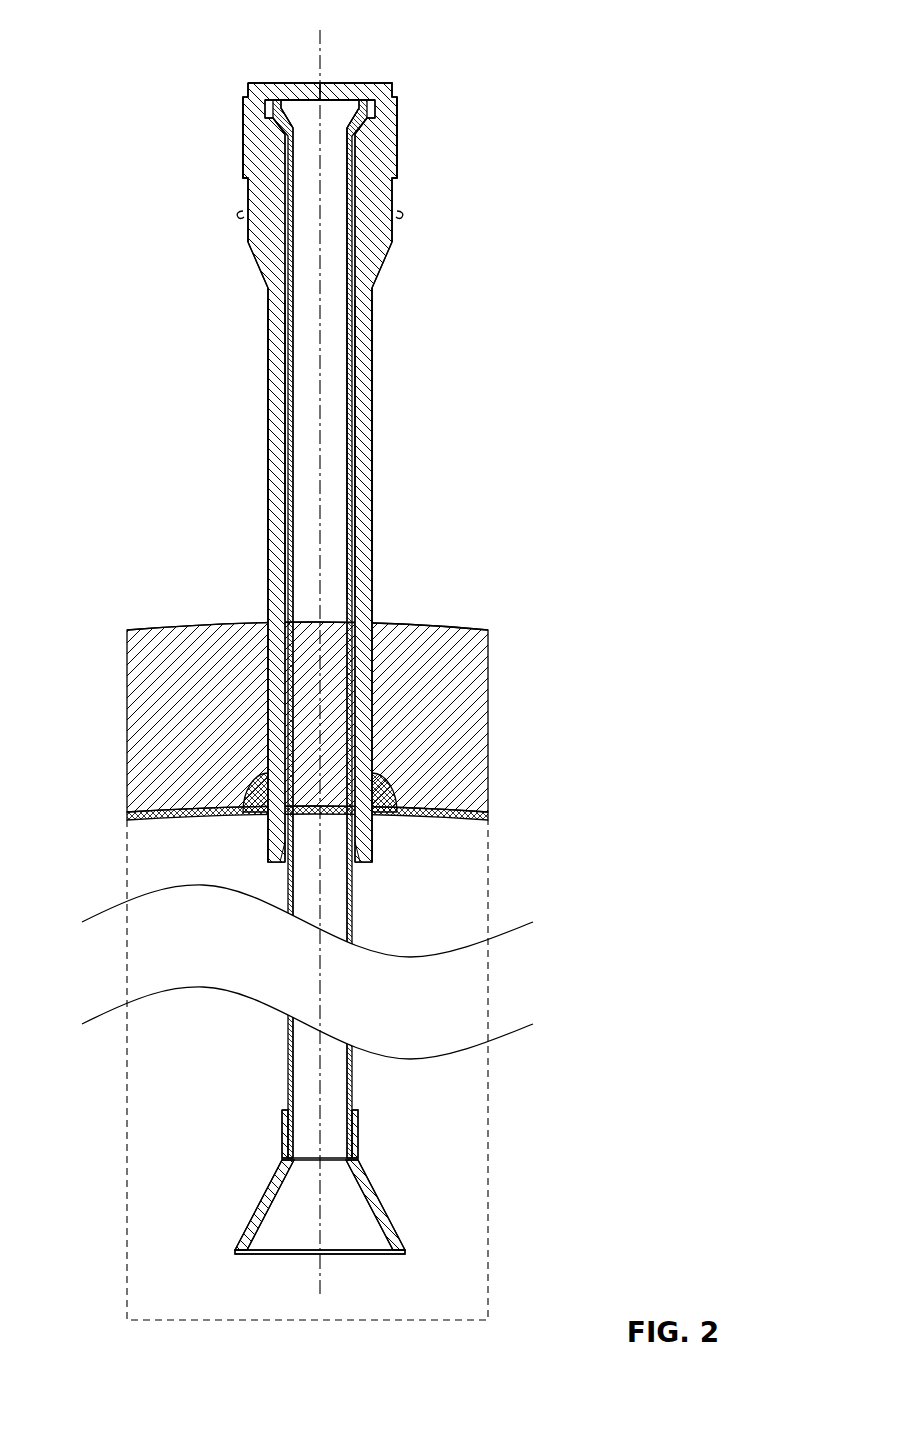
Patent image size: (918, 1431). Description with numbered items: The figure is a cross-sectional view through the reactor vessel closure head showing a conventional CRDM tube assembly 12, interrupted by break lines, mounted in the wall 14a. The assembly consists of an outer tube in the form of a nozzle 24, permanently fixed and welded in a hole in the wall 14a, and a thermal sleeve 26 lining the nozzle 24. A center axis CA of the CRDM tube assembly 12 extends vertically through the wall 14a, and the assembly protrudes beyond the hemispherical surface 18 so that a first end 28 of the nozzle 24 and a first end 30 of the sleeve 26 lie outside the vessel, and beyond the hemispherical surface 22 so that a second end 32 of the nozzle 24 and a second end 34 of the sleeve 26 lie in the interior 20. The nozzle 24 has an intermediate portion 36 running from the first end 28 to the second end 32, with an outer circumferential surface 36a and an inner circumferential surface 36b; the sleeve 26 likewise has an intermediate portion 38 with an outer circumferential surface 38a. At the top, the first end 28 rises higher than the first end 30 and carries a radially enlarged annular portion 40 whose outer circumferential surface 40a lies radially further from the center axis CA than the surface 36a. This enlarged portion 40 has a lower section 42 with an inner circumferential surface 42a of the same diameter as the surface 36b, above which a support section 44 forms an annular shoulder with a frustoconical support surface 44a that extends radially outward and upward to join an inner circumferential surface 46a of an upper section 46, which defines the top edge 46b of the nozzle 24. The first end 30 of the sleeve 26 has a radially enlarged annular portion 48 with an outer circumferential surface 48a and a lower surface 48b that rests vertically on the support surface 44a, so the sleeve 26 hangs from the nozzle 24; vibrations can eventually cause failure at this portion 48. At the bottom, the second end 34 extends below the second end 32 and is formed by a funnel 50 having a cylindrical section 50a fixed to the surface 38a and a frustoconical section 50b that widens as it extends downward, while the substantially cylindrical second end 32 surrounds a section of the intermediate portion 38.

The CRDM tube assembly 12 is at (97, 284).
The wall 14a is at (185, 640).
The hemispherical surface 18 is at (415, 625).
The interior 20 is at (164, 1080).
The hemispherical surface 22 is at (458, 820).
The nozzle 24 is at (365, 438).
The thermal sleeve 26 is at (350, 496).
The first end of nozzle 28 is at (438, 41).
The first end of sleeve 30 is at (300, 83).
The second end of nozzle 32 is at (245, 840).
The second end of sleeve 34 is at (428, 1271).
The intermediate portion of nozzle 36 is at (255, 427).
The outer circumferential surface of intermediate portion 36a is at (268, 336).
The inner circumferential surface of intermediate portion 36b is at (268, 298).
The intermediate portion of sleeve 38 is at (272, 462).
The outer circumferential surface of intermediate portion 38a is at (350, 376).
The radially enlarged annular portion 40 is at (276, 220).
The outer circumferential surface 40a is at (243, 157).
The lower section 42 is at (228, 200).
The inner circumferential surface 42a is at (275, 252).
The support section 44 is at (247, 184).
The support surface 44a is at (268, 122).
The upper section 46 is at (248, 93).
The inner circumferential surface 46a is at (265, 110).
The top edge 46b is at (257, 83).
The radially enlarged annular portion 48 is at (365, 106).
The outer circumferential surface 48a is at (367, 112).
The lower surface 48b is at (362, 130).
The funnel 50 is at (386, 1126).
The cylindrical section 50a is at (280, 1137).
The frustoconical section 50b is at (267, 1195).
The center axis CA is at (320, 377).